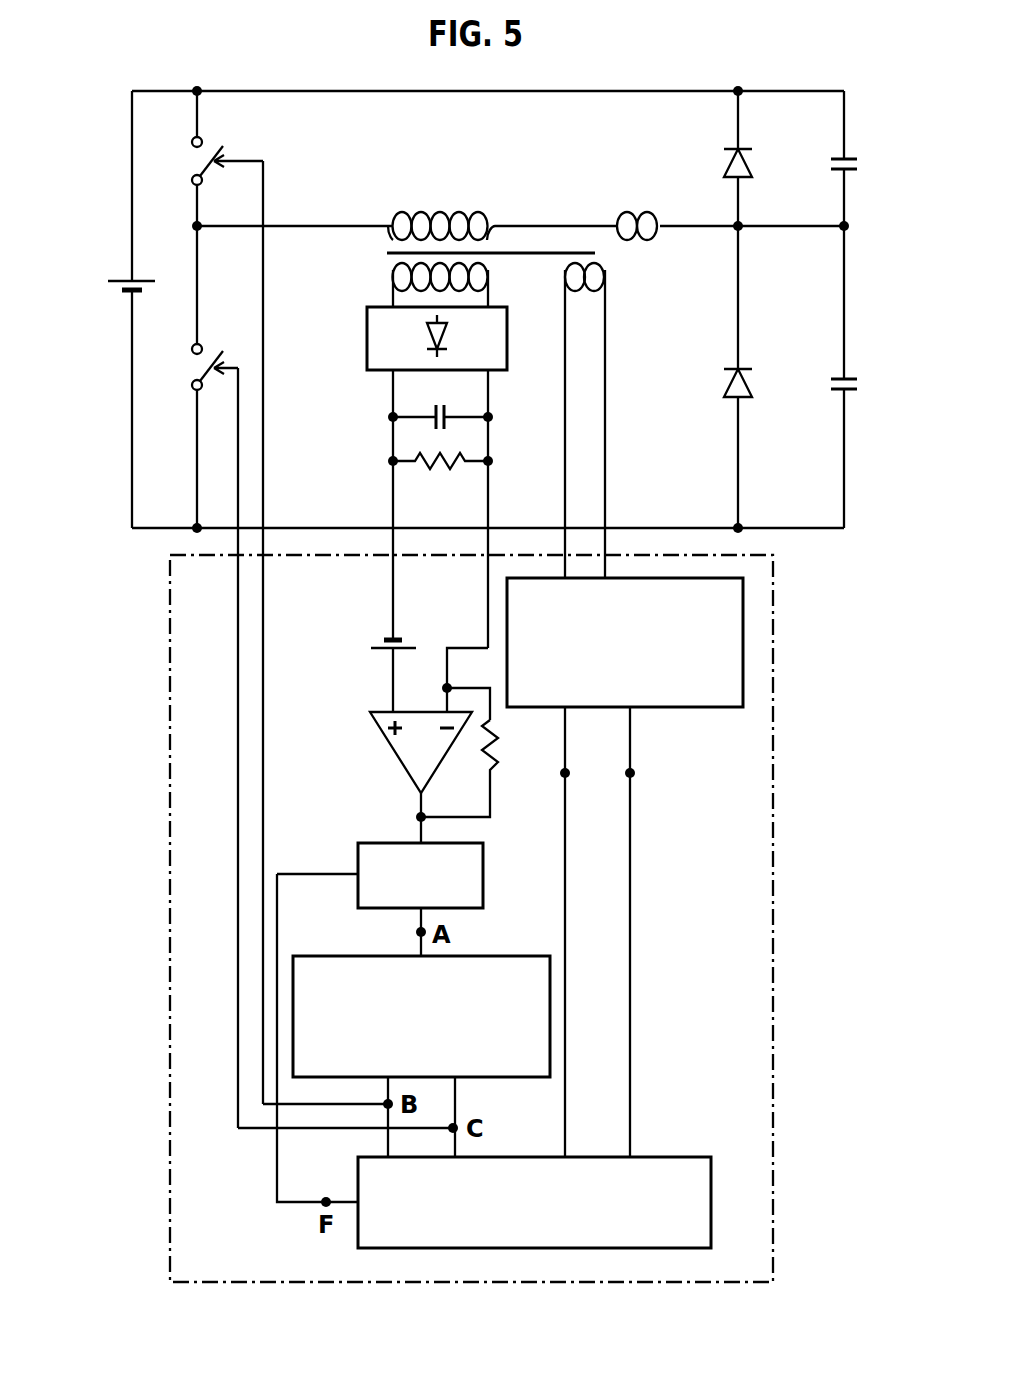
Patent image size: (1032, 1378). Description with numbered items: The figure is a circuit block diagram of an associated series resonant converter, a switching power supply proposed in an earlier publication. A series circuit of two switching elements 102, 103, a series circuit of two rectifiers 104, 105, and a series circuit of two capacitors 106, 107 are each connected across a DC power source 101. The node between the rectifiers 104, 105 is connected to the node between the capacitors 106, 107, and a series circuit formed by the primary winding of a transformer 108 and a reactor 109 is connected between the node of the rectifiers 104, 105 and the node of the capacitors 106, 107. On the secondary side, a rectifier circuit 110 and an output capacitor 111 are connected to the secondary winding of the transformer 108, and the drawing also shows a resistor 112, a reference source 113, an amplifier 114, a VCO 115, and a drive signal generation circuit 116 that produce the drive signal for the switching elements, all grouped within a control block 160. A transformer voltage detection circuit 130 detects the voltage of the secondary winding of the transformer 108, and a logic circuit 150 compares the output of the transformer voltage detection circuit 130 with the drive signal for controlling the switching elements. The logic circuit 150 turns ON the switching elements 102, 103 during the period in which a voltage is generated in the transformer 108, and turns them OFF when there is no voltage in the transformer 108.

The DC power source 101 is at (131, 281).
The switching element 102 is at (195, 167).
The switching element 103 is at (195, 372).
The rectifier 104 is at (750, 148).
The rectifier 105 is at (750, 368).
The capacitor 106 is at (850, 172).
The capacitor 107 is at (850, 392).
The transformer 108 is at (440, 211).
The reactor 109 is at (636, 211).
The rectifier circuit 110 is at (367, 333).
The output capacitor 111 is at (444, 405).
The resistor 112 is at (438, 455).
The reference voltage source 113 is at (393, 640).
The error amplifier 114 is at (397, 763).
The VCO (voltage controlled oscillator) 115 is at (398, 843).
The drive signal generation circuit 116 is at (375, 956).
The transformer voltage detection circuit 130 is at (680, 708).
The logic circuit 150 is at (673, 1156).
The control circuit 160 is at (773, 857).